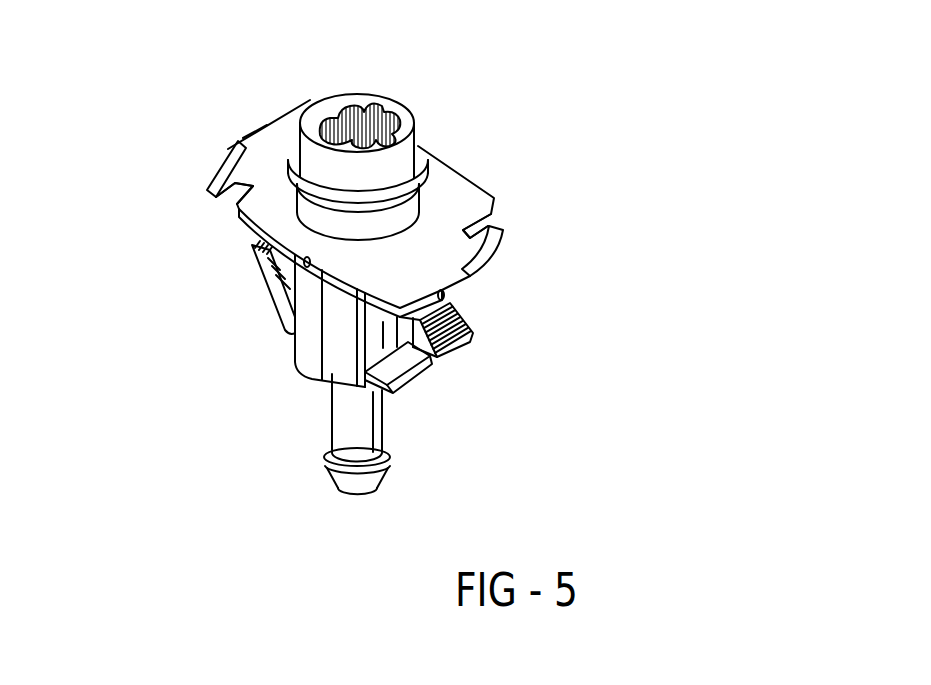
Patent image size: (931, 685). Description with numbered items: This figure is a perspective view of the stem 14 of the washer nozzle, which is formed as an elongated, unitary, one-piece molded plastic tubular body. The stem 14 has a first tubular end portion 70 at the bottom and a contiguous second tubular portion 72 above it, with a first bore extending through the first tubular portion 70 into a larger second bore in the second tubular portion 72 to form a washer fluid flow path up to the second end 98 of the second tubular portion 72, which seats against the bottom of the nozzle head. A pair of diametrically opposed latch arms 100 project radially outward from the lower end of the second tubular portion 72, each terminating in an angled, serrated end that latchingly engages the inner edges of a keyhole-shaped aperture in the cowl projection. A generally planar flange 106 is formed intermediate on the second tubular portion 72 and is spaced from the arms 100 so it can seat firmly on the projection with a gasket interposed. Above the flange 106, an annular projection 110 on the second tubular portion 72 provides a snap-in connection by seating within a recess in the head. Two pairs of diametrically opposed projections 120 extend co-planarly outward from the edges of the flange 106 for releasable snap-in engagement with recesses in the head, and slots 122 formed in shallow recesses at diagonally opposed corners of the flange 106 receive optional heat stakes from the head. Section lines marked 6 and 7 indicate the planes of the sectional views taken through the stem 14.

The stem 14 is at (613, 75).
The first tubular end portion 70 is at (350, 401).
The second tubular portion 72 is at (308, 332).
The second end 98 is at (323, 97).
The latch arms 100 is at (254, 244).
The flange 106 is at (418, 245).
The annular projection 110 is at (293, 163).
The projections 120 is at (243, 139).
The slots 122 is at (211, 194).
The section line 6- 6 is at (230, 92).
The section line 7- 7 is at (235, 238).